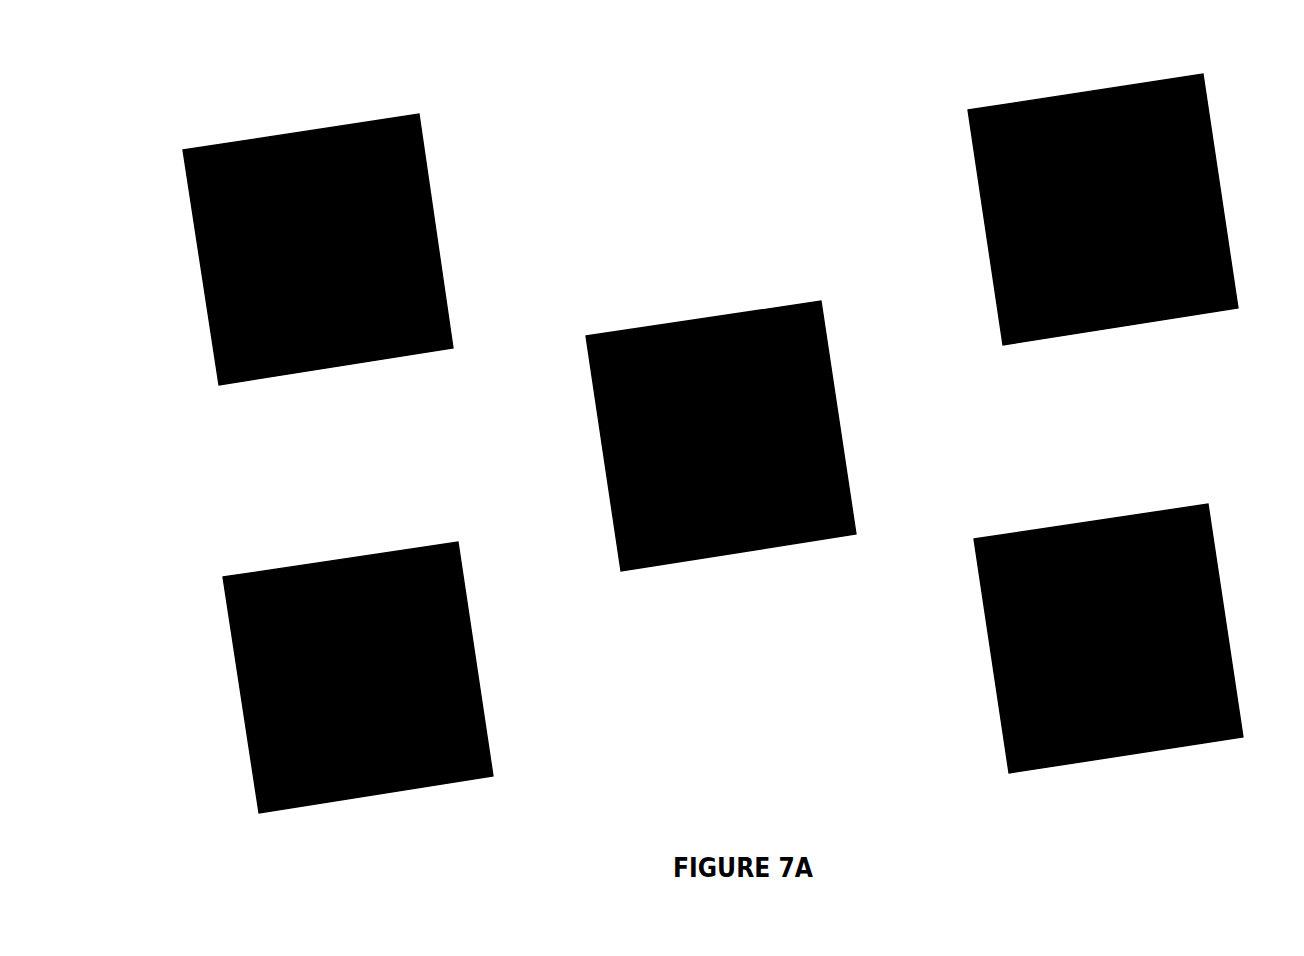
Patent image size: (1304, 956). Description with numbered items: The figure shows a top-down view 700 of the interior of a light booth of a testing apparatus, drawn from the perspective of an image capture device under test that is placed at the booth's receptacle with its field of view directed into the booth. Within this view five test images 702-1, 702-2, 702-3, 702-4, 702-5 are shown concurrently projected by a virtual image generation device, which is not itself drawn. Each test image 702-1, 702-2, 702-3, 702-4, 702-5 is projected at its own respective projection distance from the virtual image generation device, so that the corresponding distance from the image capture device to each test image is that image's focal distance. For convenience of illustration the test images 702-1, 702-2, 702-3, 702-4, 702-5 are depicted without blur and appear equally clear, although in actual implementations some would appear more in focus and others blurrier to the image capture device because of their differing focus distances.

The top-down view 700 is at (90, 87).
The test image 702-1 is at (427, 172).
The test image 702-2 is at (461, 548).
The test image 702-3 is at (824, 308).
The test image 702-4 is at (1212, 128).
The test image 702-5 is at (1212, 522).